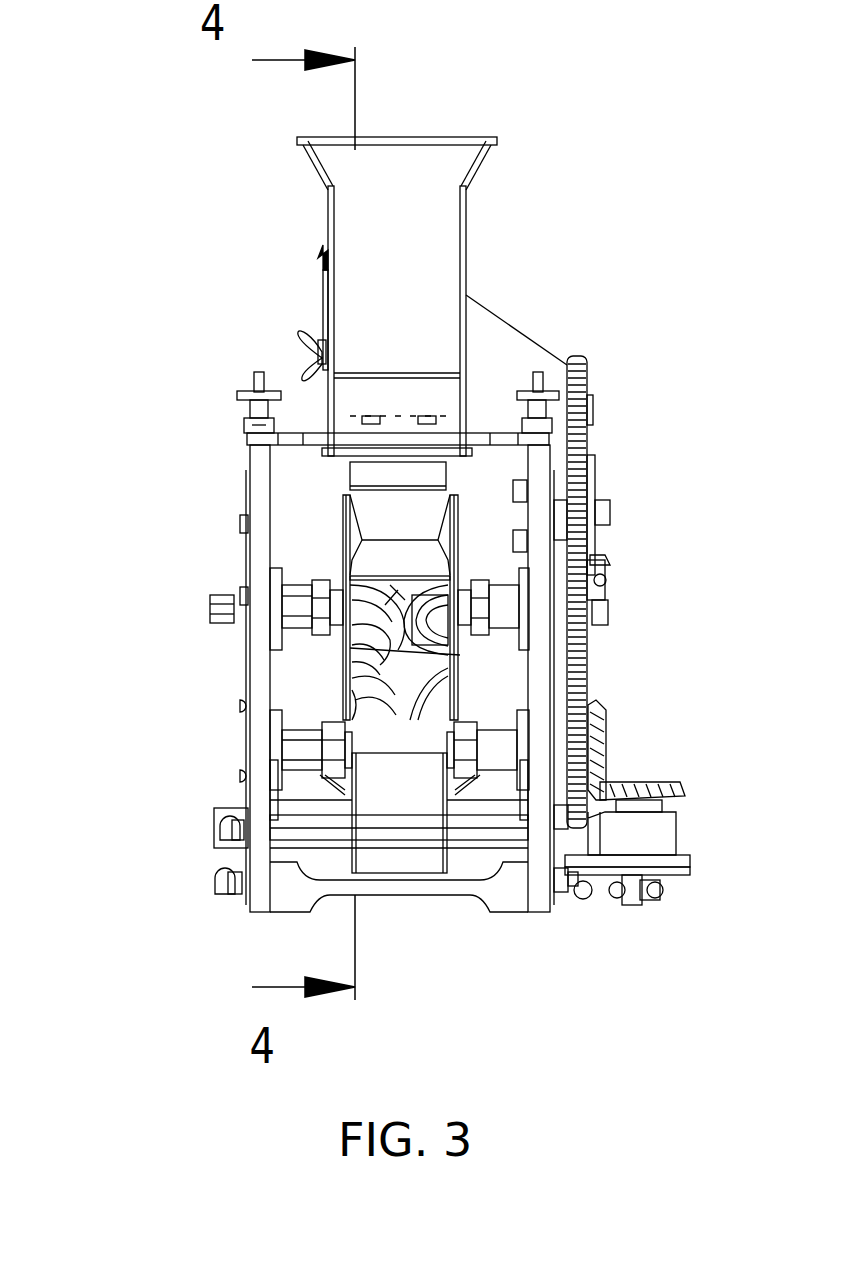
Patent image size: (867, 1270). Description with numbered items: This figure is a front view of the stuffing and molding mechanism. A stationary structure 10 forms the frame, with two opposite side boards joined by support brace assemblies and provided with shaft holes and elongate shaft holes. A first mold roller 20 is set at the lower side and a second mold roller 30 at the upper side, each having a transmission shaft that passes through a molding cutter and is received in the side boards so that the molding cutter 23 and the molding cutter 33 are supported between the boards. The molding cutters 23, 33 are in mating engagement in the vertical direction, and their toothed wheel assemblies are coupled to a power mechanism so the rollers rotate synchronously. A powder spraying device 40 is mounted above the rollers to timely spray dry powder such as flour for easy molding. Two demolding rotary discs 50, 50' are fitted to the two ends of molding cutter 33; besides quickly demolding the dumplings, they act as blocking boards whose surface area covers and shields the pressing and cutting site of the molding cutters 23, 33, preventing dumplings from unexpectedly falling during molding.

The stationary structure 10 is at (216, 468).
The first mold roller 20 is at (225, 752).
The molding cutter 23 is at (388, 738).
The second mold roller 30 is at (190, 608).
The molding cutter 33 is at (345, 580).
The powder spraying device 40 is at (470, 106).
The demolding rotary disc 50 is at (545, 630).
The demolding rotary disc 50' is at (293, 663).